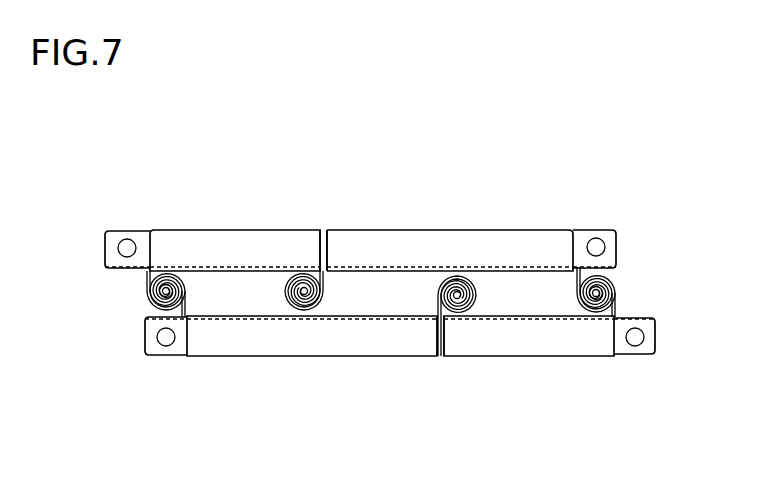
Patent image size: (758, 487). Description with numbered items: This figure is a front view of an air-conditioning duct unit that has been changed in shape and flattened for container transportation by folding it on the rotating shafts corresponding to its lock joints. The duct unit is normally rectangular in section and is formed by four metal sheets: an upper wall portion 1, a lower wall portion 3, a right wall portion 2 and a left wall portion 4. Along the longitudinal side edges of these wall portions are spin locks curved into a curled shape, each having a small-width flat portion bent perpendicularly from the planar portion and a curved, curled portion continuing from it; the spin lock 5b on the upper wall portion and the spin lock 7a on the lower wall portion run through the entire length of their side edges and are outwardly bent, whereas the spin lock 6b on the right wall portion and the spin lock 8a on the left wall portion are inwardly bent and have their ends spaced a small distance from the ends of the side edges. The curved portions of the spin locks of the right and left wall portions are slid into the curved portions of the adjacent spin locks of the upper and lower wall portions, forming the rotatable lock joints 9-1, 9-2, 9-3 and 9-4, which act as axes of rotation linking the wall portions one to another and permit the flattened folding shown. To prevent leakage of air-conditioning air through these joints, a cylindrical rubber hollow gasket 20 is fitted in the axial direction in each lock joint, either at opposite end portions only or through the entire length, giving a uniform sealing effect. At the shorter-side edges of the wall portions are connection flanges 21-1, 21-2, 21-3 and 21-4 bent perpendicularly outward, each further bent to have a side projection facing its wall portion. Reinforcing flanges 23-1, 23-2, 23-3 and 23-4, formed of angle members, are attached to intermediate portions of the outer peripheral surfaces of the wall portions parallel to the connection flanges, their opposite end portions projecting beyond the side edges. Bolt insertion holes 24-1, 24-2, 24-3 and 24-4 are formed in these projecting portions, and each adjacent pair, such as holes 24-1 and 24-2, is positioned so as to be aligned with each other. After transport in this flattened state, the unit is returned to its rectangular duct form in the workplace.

The upper wall portion 1 is at (491, 198).
The right wall portion 2 is at (211, 197).
The lower wall portion 3 is at (274, 374).
The left wall portion 4 is at (548, 386).
The spin lock 5b is at (580, 276).
The spin lock 6b is at (147, 276).
The spin lock 7a is at (146, 312).
The spin lock 8a is at (616, 307).
The lock joint 9-1 is at (283, 303).
The lock joint 9-2 is at (124, 333).
The lock joint 9-3 is at (482, 303).
The lock joint 9-4 is at (634, 243).
The hollow gasket 20 is at (160, 292).
The connection flange 21-1 is at (374, 240).
The connection flange 21-2 is at (305, 240).
The connection flange 21-3 is at (384, 348).
The connection flange 21-4 is at (448, 345).
The reinforcing flange 23-1 is at (435, 262).
The reinforcing flange 23-2 is at (207, 262).
The reinforcing flange 23-3 is at (275, 330).
The reinforcing flange 23-4 is at (491, 325).
The bolt insertion hole 24-1 is at (597, 246).
The bolt insertion hole 24-2 is at (126, 247).
The bolt insertion hole 24-3 is at (165, 338).
The bolt insertion hole 24-4 is at (636, 338).